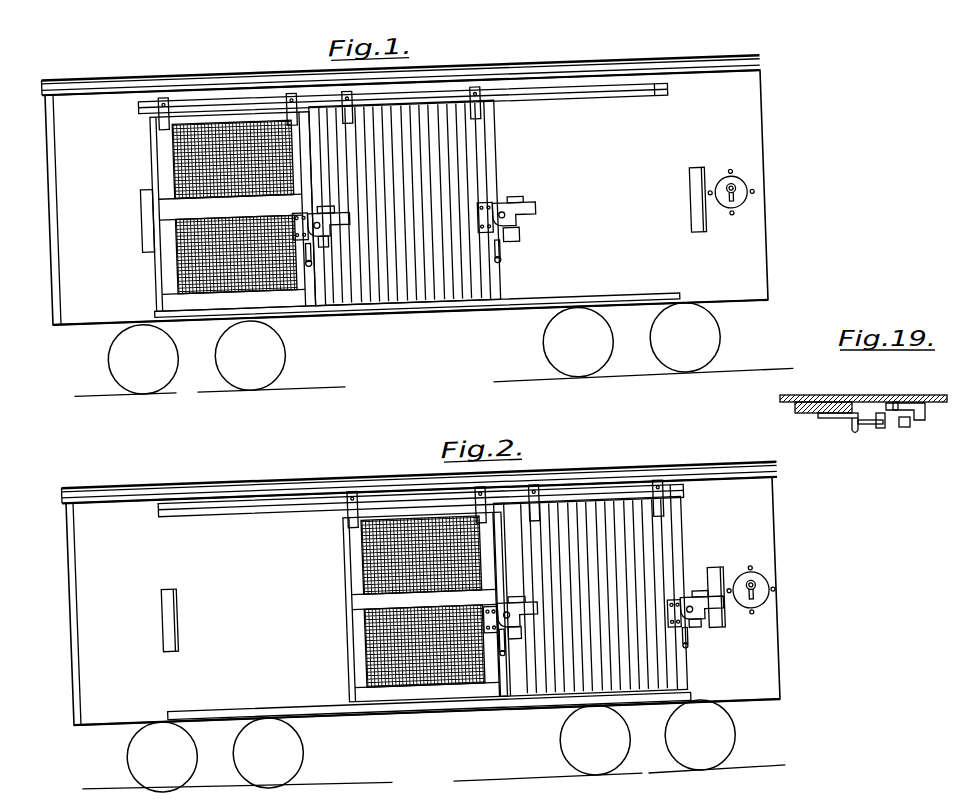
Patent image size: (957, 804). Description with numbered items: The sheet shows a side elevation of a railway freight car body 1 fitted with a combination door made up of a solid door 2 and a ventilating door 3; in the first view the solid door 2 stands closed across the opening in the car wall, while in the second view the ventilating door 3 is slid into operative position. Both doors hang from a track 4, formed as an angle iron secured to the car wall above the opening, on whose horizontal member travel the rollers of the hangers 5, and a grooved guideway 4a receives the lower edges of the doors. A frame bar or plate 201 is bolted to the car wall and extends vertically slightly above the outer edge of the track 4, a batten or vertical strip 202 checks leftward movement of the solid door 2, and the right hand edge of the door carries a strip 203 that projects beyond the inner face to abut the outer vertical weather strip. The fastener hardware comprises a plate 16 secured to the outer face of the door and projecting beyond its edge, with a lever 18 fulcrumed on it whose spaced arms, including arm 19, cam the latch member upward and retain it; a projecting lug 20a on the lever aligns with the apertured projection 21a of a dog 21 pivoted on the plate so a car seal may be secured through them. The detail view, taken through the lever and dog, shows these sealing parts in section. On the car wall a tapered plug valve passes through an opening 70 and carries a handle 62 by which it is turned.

In FIG. 1, the body of a freight car 1 is at (584, 155).
In FIG. 2, the body of a freight car 1 is at (127, 562).
In FIG. 19, the body of a freight car 1 is at (862, 394).
In FIG. 1, the solid door 2 is at (451, 126).
In FIG. 2, the solid door 2 is at (591, 596).
In FIG. 19, the solid door 2 is at (803, 414).
In FIG. 1, the ventilating door 3 is at (187, 142).
In FIG. 2, the ventilating door 3 is at (425, 607).
In FIG. 1, the track 4 is at (596, 116).
In FIG. 2, the track 4 is at (678, 506).
In FIG. 1, the grooved guideway 4a is at (595, 321).
In FIG. 2, the grooved guideway 4a is at (537, 718).
In FIG. 1, the hangers 5 is at (293, 100).
In FIG. 2, the hangers 5 is at (352, 502).
In FIG. 19, the hangers 5 is at (926, 410).
In FIG. 1, the plate 16 is at (299, 222).
In FIG. 2, the plate 16 is at (604, 614).
In FIG. 19, the plate 16 is at (830, 419).
In FIG. 1, the lever 18 is at (306, 263).
In FIG. 2, the lever 18 is at (680, 668).
In FIG. 19, the lever 18 is at (853, 433).
In FIG. 1, the arm 19 is at (137, 222).
In FIG. 2, the arm 19 is at (158, 613).
In FIG. 19, the projecting lug 20a is at (880, 429).
In FIG. 19, the dog 21 is at (896, 401).
In FIG. 19, the apertured projection 21a is at (907, 427).
In FIG. 1, the handle 62 is at (742, 225).
In FIG. 2, the handle 62 is at (762, 623).
In FIG. 1, the opening 70 is at (739, 211).
In FIG. 2, the opening 70 is at (765, 586).
In FIG. 1, the frame bar or plate 201 is at (654, 120).
In FIG. 2, the frame bar or plate 201 is at (683, 516).
In FIG. 1, the batten or vertical strip 202 is at (326, 313).
In FIG. 2, the batten or vertical strip 202 is at (507, 599).
In FIG. 1, the strip 203 is at (494, 161).
In FIG. 2, the strip 203 is at (681, 547).